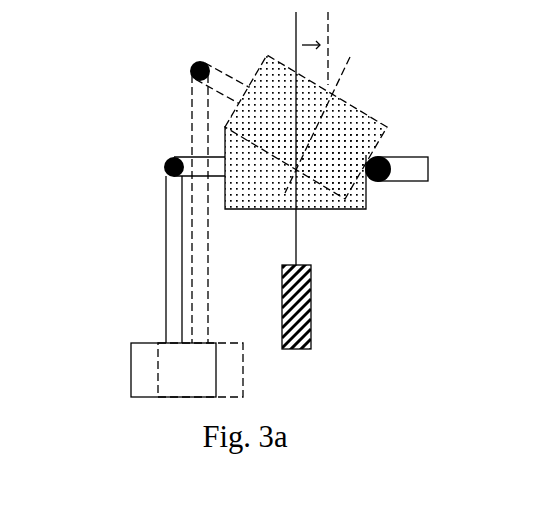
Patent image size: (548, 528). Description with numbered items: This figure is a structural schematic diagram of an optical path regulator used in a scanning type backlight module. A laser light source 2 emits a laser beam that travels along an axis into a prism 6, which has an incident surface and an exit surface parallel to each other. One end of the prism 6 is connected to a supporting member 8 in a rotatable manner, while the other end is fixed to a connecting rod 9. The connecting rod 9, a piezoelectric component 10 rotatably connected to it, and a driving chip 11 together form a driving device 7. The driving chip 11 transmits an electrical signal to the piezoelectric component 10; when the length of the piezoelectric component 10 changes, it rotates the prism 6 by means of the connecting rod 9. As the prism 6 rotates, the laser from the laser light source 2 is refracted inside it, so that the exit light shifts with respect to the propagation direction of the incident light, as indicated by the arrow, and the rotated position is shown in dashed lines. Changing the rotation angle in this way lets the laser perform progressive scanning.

The laser light source 2 is at (311, 306).
The prism 6 is at (321, 209).
The driving device 7 is at (75, 93).
The supporting member 8 is at (404, 181).
The connecting rod 9 is at (190, 158).
The piezoelectric component 10 is at (166, 237).
The driving chip 11 is at (137, 342).